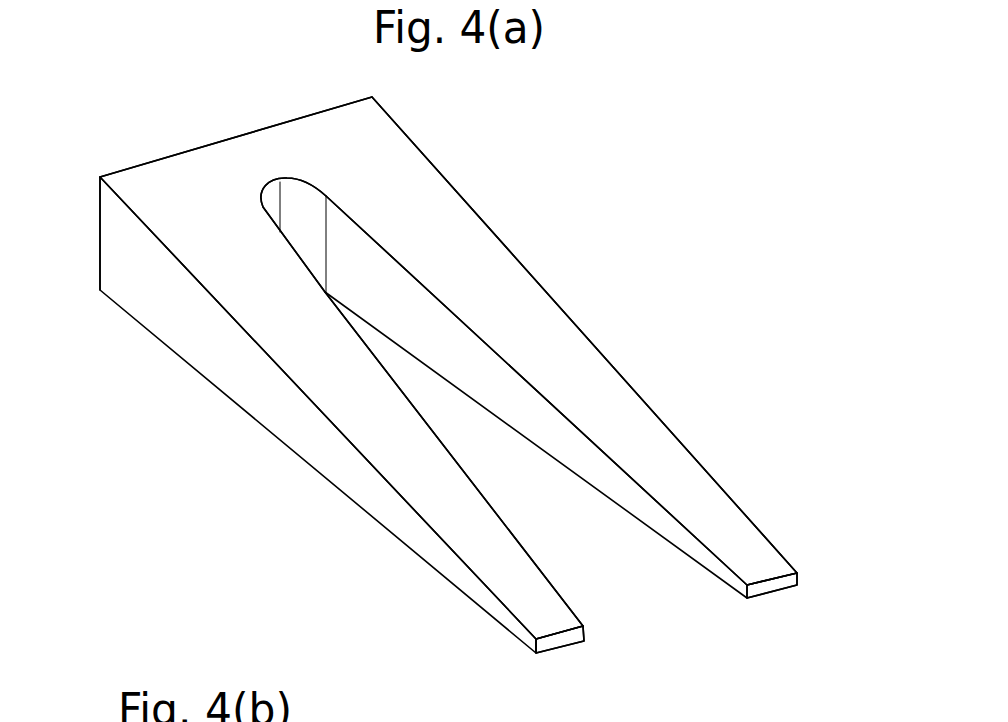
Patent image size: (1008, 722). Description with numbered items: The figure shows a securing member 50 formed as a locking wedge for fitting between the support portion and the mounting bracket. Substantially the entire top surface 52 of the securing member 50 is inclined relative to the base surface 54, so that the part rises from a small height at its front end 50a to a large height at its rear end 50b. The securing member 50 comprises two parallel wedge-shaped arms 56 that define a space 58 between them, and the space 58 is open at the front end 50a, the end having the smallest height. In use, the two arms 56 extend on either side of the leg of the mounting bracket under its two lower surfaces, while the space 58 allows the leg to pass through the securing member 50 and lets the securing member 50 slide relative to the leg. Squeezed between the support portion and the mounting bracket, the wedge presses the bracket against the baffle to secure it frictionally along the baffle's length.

The securing member 50 is at (512, 180).
The front end 50a is at (567, 648).
The rear end 50b is at (98, 240).
The top surface 52 is at (232, 167).
The base surface 54 is at (180, 360).
The wedge-shaped arms 56 is at (467, 522).
The space 58 is at (527, 470).